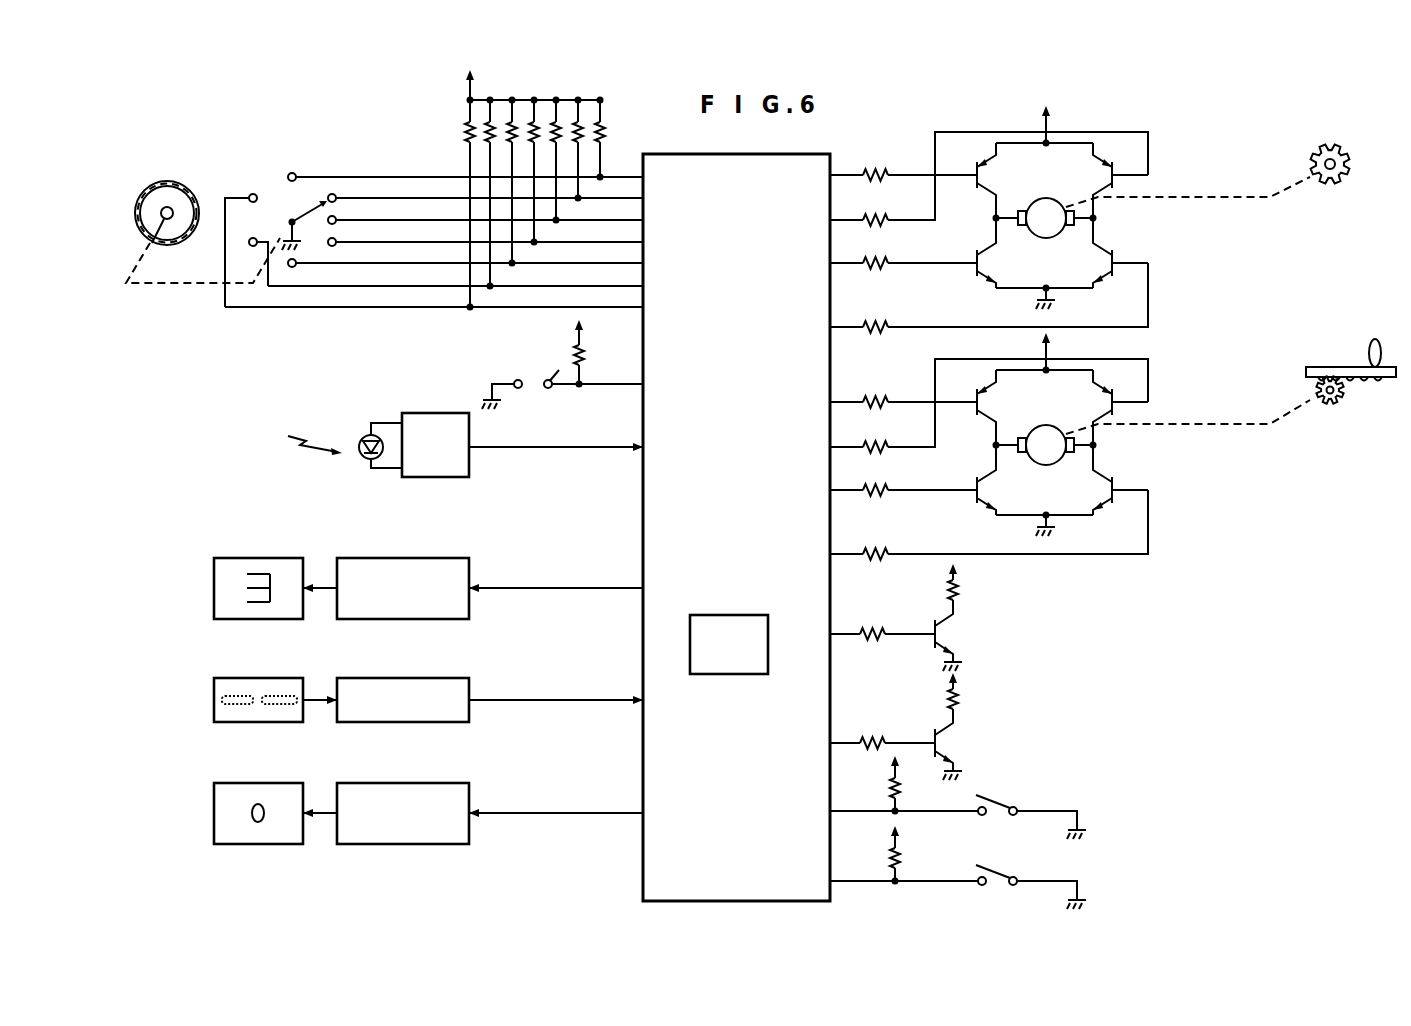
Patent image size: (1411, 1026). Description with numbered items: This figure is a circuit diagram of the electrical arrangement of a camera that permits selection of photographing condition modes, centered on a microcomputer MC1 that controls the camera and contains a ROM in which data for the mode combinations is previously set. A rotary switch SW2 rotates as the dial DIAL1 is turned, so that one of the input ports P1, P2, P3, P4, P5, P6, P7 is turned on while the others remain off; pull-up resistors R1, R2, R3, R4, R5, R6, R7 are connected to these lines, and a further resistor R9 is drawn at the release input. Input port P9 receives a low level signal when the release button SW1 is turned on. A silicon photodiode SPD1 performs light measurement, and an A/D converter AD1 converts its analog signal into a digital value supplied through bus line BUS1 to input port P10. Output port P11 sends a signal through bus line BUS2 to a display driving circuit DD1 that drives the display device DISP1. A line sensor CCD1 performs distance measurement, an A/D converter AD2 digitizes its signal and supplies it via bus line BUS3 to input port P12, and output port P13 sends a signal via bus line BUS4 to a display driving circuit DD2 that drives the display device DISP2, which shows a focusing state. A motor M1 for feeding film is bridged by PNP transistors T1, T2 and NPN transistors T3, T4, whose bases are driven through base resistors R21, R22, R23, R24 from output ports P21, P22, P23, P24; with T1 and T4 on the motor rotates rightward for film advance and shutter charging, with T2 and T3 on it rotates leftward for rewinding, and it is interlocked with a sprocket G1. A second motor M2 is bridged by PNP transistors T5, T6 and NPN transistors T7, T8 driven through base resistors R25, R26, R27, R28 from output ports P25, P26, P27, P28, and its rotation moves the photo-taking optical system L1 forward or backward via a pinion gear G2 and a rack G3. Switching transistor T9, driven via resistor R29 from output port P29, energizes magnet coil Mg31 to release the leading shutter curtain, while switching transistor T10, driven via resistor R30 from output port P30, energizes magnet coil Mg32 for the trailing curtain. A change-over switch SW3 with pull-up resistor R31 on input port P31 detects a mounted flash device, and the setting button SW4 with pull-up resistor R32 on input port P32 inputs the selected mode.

The dial DIAL1 is at (158, 182).
The rotary switch SW2 is at (280, 193).
The pull-up resistor R1 is at (604, 128).
The pull-up resistor R2 is at (586, 140).
The pull-up resistor R3 is at (563, 120).
The pull-up resistor R4 is at (541, 120).
The pull-up resistor R5 is at (518, 120).
The pull-up resistor R6 is at (486, 124).
The pull-up resistor R7 is at (466, 142).
The resistor R9 is at (589, 354).
The microcomputer MC1 is at (684, 154).
The element ROM is at (729, 644).
The input port P1 is at (649, 178).
The input port P2 is at (649, 199).
The input port P3 is at (649, 221).
The input port P4 is at (649, 243).
The input port P5 is at (649, 264).
The input port P6 is at (649, 287).
The input port P7 is at (649, 308).
The input port P9 is at (649, 385).
The input port P10 is at (654, 448).
The output port P11 is at (653, 589).
The input port P12 is at (654, 701).
The output port P13 is at (654, 814).
The output port P21 is at (818, 176).
The output port P22 is at (818, 221).
The output port P23 is at (818, 264).
The output port P24 is at (818, 328).
The output port P25 is at (818, 403).
The output port P26 is at (818, 448).
The output port P27 is at (818, 491).
The output port P28 is at (818, 555).
The output port P29 is at (818, 635).
The output port P30 is at (818, 744).
The input port P31 is at (818, 812).
The input port P32 is at (818, 882).
The release button SW1 is at (562, 380).
The silicon photodiode SPD1 is at (360, 434).
The A/D converter AD1 is at (420, 412).
The bus line BUS1 is at (556, 449).
The display device DISP1 is at (232, 556).
The display driving circuit DD1 is at (354, 556).
The bus line BUS2 is at (556, 590).
The line sensor CCD1 is at (234, 676).
The A/D converter AD2 is at (354, 676).
The bus line BUS3 is at (556, 702).
The display device DISP2 is at (240, 782).
The display driving circuit DD2 is at (356, 782).
The bus line BUS4 is at (556, 815).
The base resistor R21 is at (903, 161).
The base resistor R22 is at (989, 179).
The base resistor R23 is at (903, 249).
The base resistor R24 is at (989, 298).
The base resistor R25 is at (903, 388).
The base resistor R26 is at (989, 406).
The base resistor R27 is at (903, 476).
The base resistor R28 is at (989, 525).
The resistor R29 is at (882, 622).
The resistor R30 is at (882, 731).
The pull-up resistor R31 is at (909, 785).
The pull-up resistor R32 is at (909, 855).
The PNP transistor T1 is at (1000, 180).
The PNP transistor T2 is at (1111, 180).
The NPN transistor T3 is at (1000, 253).
The NPN transistor T4 is at (1111, 253).
The PNP transistor T5 is at (1000, 407).
The PNP transistor T6 is at (1111, 407).
The NPN transistor T7 is at (1000, 480).
The NPN transistor T8 is at (1111, 480).
The NPN transistor T9 is at (954, 638).
The NPN transistor T10 is at (958, 747).
The motor M1 is at (1045, 207).
The motor M2 is at (1045, 434).
The sprocket G1 is at (1336, 184).
The pinion gear G2 is at (1338, 404).
The rack G3 is at (1380, 380).
The photo-taking optical system L1 is at (1375, 338).
The magnet coil Mg31 is at (971, 587).
The magnet coil Mg32 is at (971, 698).
The change-over switch SW3 is at (958, 808).
The setting button SW4 is at (958, 879).